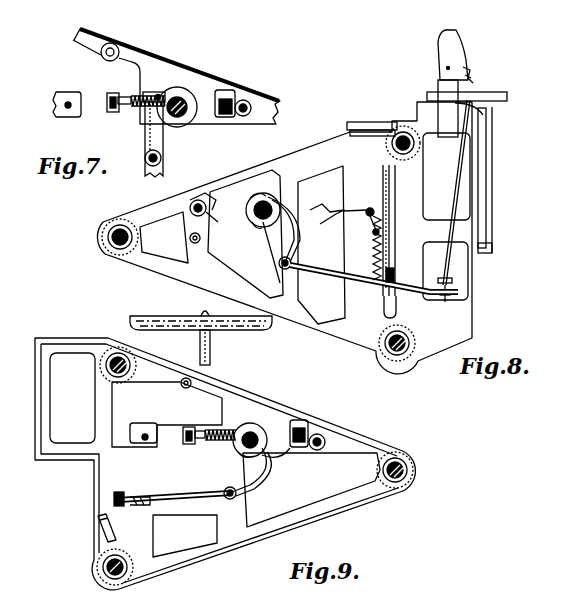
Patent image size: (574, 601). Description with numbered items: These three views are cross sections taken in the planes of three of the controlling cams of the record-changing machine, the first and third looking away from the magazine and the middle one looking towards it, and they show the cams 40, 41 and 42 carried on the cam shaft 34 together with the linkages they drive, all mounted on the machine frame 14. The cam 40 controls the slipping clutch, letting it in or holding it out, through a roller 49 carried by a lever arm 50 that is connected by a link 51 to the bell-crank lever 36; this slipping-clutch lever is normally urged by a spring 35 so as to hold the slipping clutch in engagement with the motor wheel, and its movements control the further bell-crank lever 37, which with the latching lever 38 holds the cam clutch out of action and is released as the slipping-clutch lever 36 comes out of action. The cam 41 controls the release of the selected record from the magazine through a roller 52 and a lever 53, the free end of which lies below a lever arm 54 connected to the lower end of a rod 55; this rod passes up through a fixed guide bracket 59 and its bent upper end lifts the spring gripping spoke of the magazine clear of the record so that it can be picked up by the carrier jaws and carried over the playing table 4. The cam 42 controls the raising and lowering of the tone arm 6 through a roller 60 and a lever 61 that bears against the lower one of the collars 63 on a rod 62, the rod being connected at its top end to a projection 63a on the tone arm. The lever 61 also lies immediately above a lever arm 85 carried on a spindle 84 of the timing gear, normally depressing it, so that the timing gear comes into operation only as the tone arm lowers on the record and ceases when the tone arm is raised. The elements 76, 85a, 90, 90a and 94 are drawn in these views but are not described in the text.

In FIG. 8, the playing table 4 is at (150, 312).
In FIG. 8, the tone arm 6 is at (440, 58).
In FIG. 7, the frame 14 is at (160, 62).
In FIG. 8, the frame 14 is at (292, 287).
In FIG. 9, the frame 14 is at (322, 502).
In FIG. 7, the cam shaft 34 is at (183, 115).
In FIG. 8, the cam shaft 34 is at (261, 220).
In FIG. 9, the cam shaft 34 is at (246, 450).
In FIG. 7, the spring 35 is at (133, 108).
In FIG. 9, the spring 35 is at (214, 442).
In FIG. 7, the bell-crank lever 36 is at (108, 110).
In FIG. 9, the bell-crank lever 36 is at (186, 444).
In FIG. 7, the bell-crank lever 37 is at (228, 117).
In FIG. 9, the bell-crank lever 37 is at (302, 450).
In FIG. 8, the latching lever 38 is at (323, 202).
In FIG. 7, the cam 40 is at (190, 100).
In FIG. 9, the cam 41 is at (250, 423).
In FIG. 8, the cam 42 is at (262, 192).
In FIG. 7, the roller 49 is at (160, 92).
In FIG. 7, the lever arm 50 is at (147, 140).
In FIG. 7, the link 51 is at (132, 96).
In FIG. 9, the link 51 is at (206, 429).
In FIG. 9, the roller 52 is at (270, 450).
In FIG. 9, the lever 53 is at (174, 505).
In FIG. 9, the lever arm 54 is at (120, 492).
In FIG. 8, the rod 55 is at (370, 122).
In FIG. 8, the guide bracket 59 is at (348, 131).
In FIG. 8, the roller 60 is at (292, 203).
In FIG. 8, the lever 61 is at (312, 255).
In FIG. 8, the rod 62 is at (457, 166).
In FIG. 8, the collars 63 is at (456, 291).
In FIG. 8, the projection 63a is at (468, 66).
In FIG. 8, the roller 76 is at (204, 195).
In FIG. 9, the spindle 84 is at (148, 497).
In FIG. 9, the lever arm 85 is at (118, 524).
In FIG. 8, the lug 85a is at (418, 325).
In FIG. 9, the lug 85a is at (100, 521).
In FIG. 7, the stop 90 is at (68, 103).
In FIG. 8, the stop 90 is at (373, 231).
In FIG. 9, the stop 90 is at (146, 434).
In FIG. 8, the pin 90a is at (368, 207).
In FIG. 8, the spring 94 is at (372, 266).